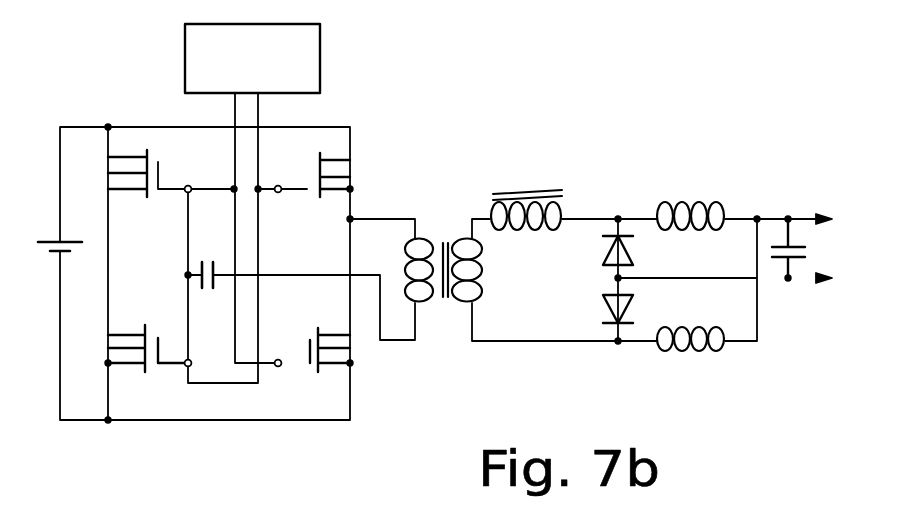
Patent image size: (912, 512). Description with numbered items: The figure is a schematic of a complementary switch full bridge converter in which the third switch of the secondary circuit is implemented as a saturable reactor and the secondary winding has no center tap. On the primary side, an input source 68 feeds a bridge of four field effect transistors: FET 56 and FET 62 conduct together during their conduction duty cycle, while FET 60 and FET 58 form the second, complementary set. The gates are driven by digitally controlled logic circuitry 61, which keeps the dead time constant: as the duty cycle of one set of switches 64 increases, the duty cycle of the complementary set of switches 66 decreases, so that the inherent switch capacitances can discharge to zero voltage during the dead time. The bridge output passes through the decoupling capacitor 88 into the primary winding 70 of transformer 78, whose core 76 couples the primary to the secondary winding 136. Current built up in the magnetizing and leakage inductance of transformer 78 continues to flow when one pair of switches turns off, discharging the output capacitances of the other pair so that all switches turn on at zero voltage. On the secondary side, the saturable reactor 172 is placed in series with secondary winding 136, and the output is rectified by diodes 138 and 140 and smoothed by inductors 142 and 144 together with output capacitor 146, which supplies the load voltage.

The digitally controlled logic circuitry 61 is at (322, 60).
The field effect transistor Q1 56 is at (352, 165).
The field effect transistor Q2 58 is at (355, 365).
The field effect transistor Q3 60 is at (108, 190).
The field effect transistor Q4 62 is at (108, 342).
The set of switches 64 is at (278, 178).
The complementary set of switches 66 is at (173, 180).
The input voltage source 68 is at (58, 252).
The capacitor Cr 88 is at (208, 292).
The primary winding L1 70 is at (406, 268).
The transformer core 76 is at (452, 200).
The transformer 78 is at (464, 214).
The secondary winding 136 is at (486, 280).
The saturable reactor Ls2 172 is at (558, 184).
The inductor 142 is at (730, 206).
The diode 138 is at (640, 261).
The diode D04 140 is at (616, 321).
The inductor 144 is at (680, 352).
The output capacitor Co2 146 is at (805, 262).